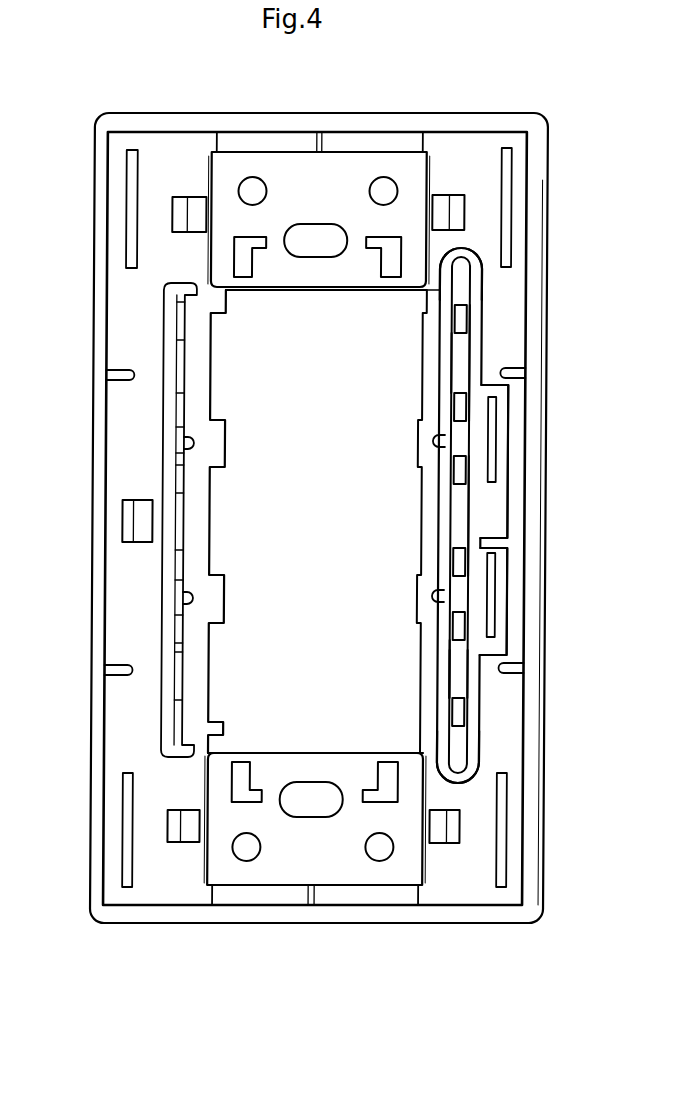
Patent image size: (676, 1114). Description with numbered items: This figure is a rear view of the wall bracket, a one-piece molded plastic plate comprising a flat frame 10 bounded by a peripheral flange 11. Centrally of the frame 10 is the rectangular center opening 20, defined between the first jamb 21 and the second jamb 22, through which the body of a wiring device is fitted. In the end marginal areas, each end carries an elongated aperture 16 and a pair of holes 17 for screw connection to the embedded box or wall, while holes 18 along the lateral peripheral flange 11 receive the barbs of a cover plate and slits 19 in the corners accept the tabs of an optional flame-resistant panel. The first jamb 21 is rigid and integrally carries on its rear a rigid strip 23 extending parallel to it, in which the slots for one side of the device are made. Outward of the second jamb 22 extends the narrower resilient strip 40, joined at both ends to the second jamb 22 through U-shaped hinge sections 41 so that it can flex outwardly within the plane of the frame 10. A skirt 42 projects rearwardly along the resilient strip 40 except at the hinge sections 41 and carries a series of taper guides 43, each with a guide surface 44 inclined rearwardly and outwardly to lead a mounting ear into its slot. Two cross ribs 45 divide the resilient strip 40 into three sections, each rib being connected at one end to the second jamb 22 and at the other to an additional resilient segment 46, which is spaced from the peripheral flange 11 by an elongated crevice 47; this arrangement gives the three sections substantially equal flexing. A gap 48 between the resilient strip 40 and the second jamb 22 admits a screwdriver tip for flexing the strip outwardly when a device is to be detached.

The frame 10 is at (551, 111).
The peripheral flange 11 is at (534, 250).
The elongated aperture 16 is at (323, 230).
The holes 17 is at (253, 184).
The holes 18 is at (198, 204).
The slits 19 is at (132, 247).
The center opening 20 is at (290, 752).
The first jamb 21 is at (203, 525).
The second jamb 22 is at (430, 515).
The rigid strip 23 is at (167, 392).
The resilient strip 40 is at (478, 656).
The U-shaped hinge sections 41 is at (456, 256).
The skirt 42 is at (463, 683).
The taper guides 43 is at (469, 401).
The guide surface 44 is at (467, 319).
The cross ribs 45 is at (450, 441).
The additional resilient segment 46 is at (486, 412).
The elongated crevice 47 is at (494, 431).
The gap 48 is at (455, 358).